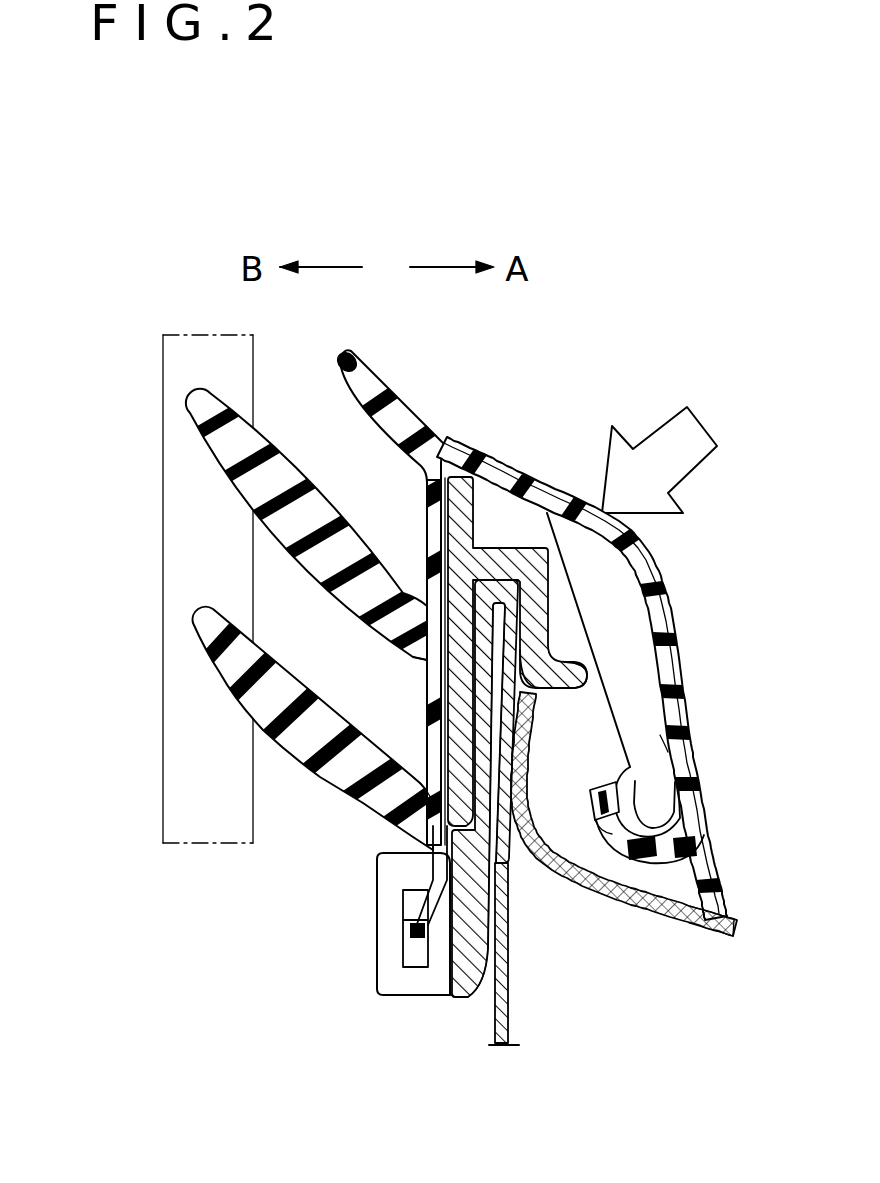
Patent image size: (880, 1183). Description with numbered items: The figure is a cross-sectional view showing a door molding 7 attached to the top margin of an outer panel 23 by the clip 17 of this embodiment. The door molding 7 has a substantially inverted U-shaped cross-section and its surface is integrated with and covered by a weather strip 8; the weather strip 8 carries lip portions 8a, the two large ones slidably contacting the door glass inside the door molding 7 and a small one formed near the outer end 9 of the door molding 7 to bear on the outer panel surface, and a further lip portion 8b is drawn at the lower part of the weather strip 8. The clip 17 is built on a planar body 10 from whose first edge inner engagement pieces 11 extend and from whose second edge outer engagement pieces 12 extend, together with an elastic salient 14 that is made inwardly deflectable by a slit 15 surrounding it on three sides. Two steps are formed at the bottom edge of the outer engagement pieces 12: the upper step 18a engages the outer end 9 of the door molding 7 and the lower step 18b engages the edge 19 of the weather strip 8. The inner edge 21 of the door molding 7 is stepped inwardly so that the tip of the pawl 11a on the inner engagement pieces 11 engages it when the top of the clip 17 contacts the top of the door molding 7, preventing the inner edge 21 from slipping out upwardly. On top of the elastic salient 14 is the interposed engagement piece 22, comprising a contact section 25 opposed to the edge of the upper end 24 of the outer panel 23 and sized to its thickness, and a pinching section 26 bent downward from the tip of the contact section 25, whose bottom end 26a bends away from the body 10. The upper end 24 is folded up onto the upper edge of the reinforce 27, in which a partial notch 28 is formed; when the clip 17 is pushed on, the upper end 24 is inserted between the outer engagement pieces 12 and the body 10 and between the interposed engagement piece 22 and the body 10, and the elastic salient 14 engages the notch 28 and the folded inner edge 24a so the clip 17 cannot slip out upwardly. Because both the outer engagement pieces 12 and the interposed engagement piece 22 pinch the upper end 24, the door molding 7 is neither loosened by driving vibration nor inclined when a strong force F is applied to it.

The door molding 7 is at (427, 687).
The weather strip 8 is at (638, 556).
The lip portion 8a is at (205, 610).
The lower lip of weather strip 8b is at (716, 906).
The outer end 9 is at (692, 790).
The planar body 10 is at (420, 655).
The inner engagement piece 11 is at (378, 983).
The pawl 11a is at (410, 891).
The outer engagement piece 12 is at (622, 712).
The elastic salient 14 is at (668, 747).
The slit 15 is at (440, 780).
The clip 17 is at (432, 1010).
The upper step 18a is at (652, 778).
The lower step 18b is at (597, 783).
The edge of weather strip 19 is at (607, 823).
The inner edge 21 is at (403, 997).
The interposed engagement piece 22 is at (520, 662).
The outer panel 23 is at (694, 930).
The upper end 24 is at (525, 633).
The folded inner edge 24a is at (433, 784).
The contact section 25 is at (520, 548).
The pinching section 26 is at (548, 565).
The bottom end 26a is at (590, 664).
The reinforce 27 is at (521, 1002).
The notch 28 is at (501, 864).
The force F is at (700, 426).